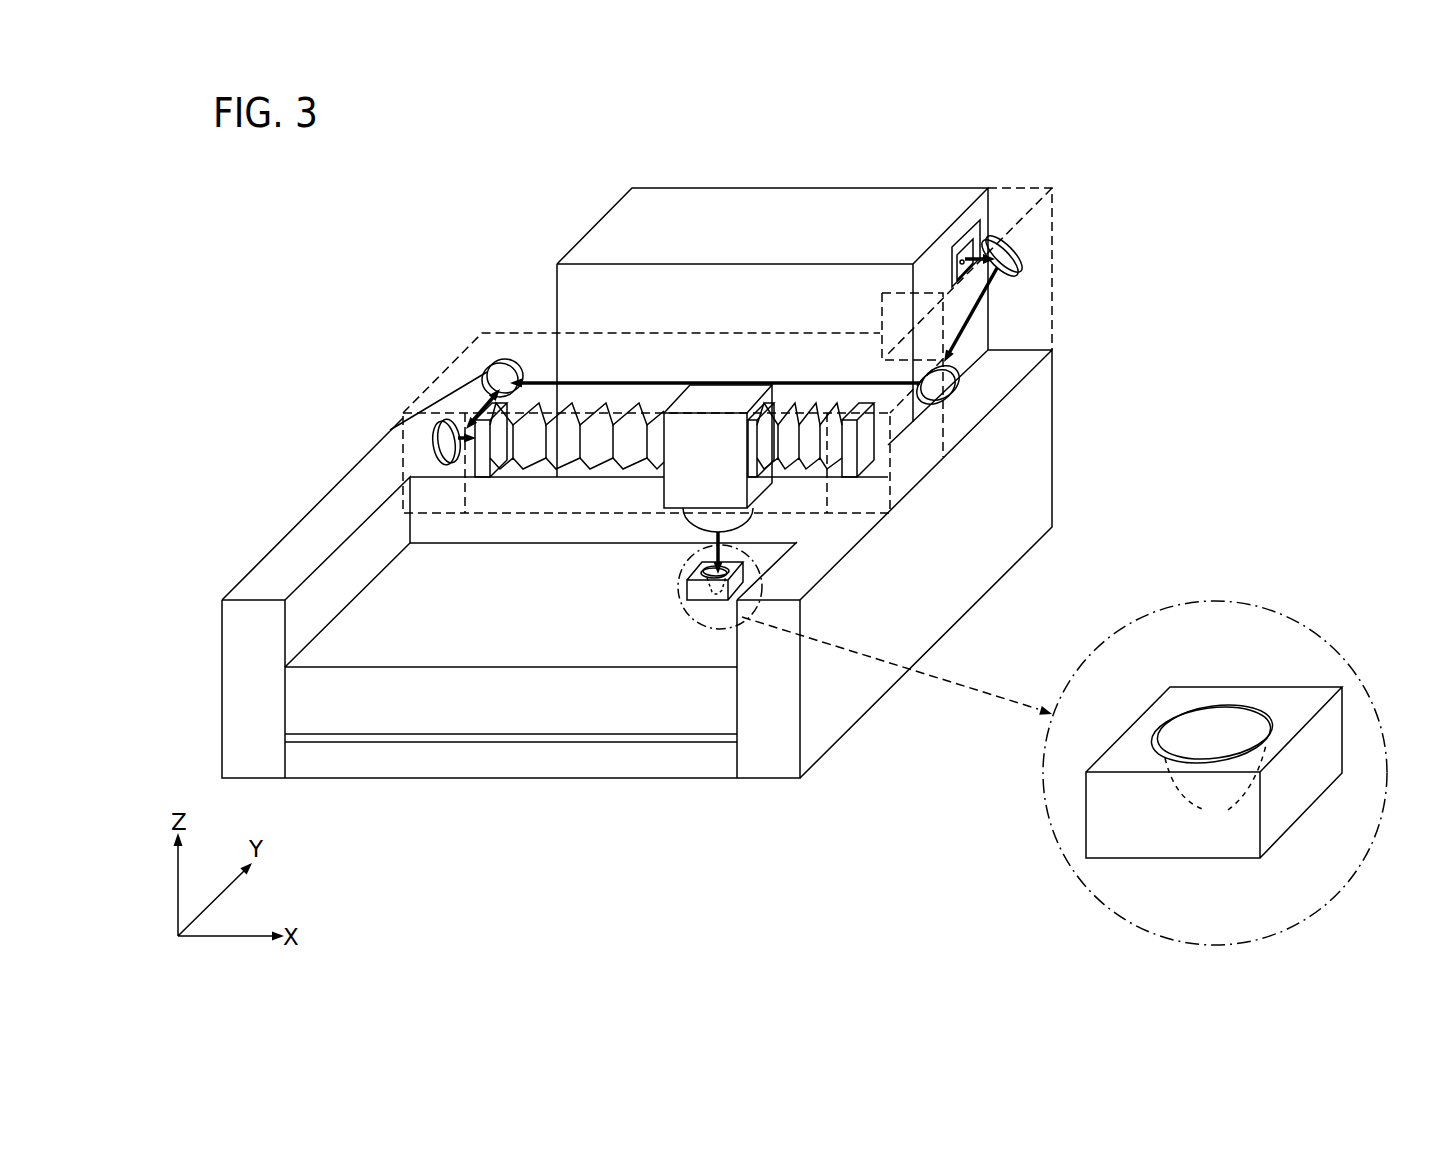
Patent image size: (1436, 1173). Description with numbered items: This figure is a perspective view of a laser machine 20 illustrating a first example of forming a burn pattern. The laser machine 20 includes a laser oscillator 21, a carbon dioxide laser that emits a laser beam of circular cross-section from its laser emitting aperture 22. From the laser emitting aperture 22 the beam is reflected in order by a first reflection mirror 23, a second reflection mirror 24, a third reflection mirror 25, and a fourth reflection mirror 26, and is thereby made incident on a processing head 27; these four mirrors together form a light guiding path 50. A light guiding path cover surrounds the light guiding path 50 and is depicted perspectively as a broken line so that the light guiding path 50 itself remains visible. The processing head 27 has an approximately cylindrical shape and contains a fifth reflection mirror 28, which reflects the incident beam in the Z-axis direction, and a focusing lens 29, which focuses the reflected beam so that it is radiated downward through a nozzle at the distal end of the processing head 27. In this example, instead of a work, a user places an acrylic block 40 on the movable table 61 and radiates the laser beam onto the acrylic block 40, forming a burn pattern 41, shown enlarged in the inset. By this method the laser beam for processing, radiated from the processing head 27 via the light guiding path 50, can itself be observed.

The laser machine 20 is at (1146, 150).
The laser oscillator 21 is at (700, 150).
The laser emitting aperture 22 is at (964, 263).
The first reflection mirror 23 is at (1012, 250).
The second reflection mirror 24 is at (960, 382).
The third reflection mirror 25 is at (490, 370).
The fourth reflection mirror 26 is at (433, 438).
The processing head 27 is at (698, 470).
The fifth reflection mirror 28 is at (759, 446).
The focusing lens 29 is at (718, 520).
The acrylic block 40 is at (1198, 687).
The burn pattern 41 is at (1230, 727).
The light guiding path 50 is at (978, 320).
The movable table 61 is at (443, 700).